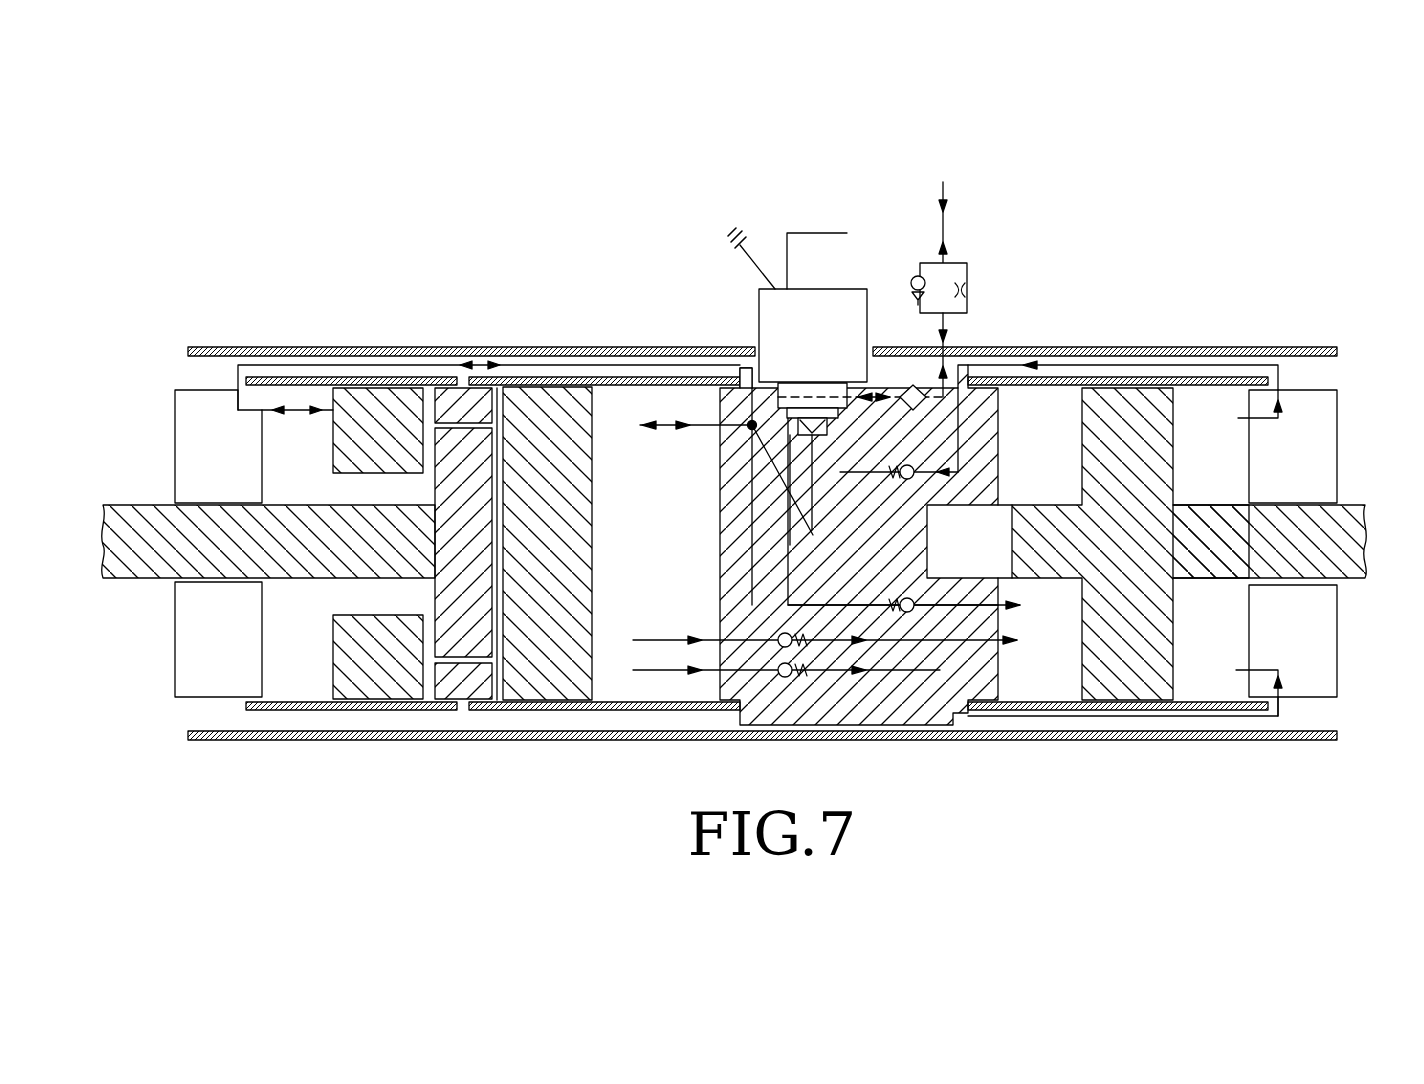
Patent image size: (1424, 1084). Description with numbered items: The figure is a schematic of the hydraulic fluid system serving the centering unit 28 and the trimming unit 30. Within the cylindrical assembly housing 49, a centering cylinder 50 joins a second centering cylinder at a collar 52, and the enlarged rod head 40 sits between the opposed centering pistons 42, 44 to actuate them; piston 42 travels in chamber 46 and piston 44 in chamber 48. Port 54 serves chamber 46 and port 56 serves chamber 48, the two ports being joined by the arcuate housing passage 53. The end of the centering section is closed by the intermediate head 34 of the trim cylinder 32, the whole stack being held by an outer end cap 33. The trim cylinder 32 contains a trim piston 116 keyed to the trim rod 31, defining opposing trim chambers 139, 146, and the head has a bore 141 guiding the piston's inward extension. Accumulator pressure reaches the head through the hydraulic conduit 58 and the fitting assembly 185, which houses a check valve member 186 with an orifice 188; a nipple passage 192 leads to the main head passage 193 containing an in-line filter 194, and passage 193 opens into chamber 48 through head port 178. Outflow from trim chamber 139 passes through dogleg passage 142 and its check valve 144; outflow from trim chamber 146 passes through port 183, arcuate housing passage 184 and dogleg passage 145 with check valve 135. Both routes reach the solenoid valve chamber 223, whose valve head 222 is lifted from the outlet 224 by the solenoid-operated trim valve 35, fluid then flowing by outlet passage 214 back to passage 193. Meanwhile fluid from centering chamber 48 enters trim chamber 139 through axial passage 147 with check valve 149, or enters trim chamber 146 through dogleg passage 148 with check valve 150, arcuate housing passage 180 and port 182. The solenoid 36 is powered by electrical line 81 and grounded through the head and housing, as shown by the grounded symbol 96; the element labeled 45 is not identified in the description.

The centering unit 28 is at (428, 764).
The trimming unit 30 is at (1297, 790).
The trim rod 31 is at (1358, 503).
The trim cylinder 32 is at (1196, 377).
The outer end head 33 is at (1343, 656).
The intermediate head 34 is at (862, 714).
The trim valve 35 is at (780, 362).
The solenoid 36 is at (813, 335).
The rod head 40 is at (433, 487).
The centering piston 42 is at (333, 672).
The centering piston 44 is at (565, 693).
The control line 45 is at (867, 367).
The centering chamber 46 is at (290, 658).
The centering chamber 48 is at (613, 410).
The assembly housing 49 is at (307, 347).
The centering cylinder 50 is at (267, 377).
The collar 52 is at (486, 705).
The arcuate housing passage 53 is at (379, 377).
The outer port 54 is at (258, 412).
The inner port 56 is at (740, 372).
The hydraulic conduit 58 is at (943, 192).
The electrical line 81 is at (810, 233).
The grounded symbol 96 is at (740, 245).
The trim piston 116 is at (1175, 427).
The check valve 135 is at (950, 474).
The trim chamber 139 is at (1062, 697).
The bore 141 is at (1027, 573).
The dogleg passage 142 is at (785, 538).
The check valve 144 is at (907, 605).
The dogleg passage 145 is at (985, 467).
The trim chamber 146 is at (1196, 692).
The axial passage 147 is at (950, 625).
The dogleg passage 148 is at (953, 722).
The check valve 149 is at (783, 633).
The check valve 150 is at (784, 677).
The head port 178 is at (721, 466).
The arcuate housing passage 180 is at (1135, 717).
The port 182 is at (1270, 665).
The port 183 is at (1278, 418).
The arcuate housing passage 184 is at (1165, 363).
The fitting assembly 185 is at (1020, 232).
The check valve member 186 is at (911, 283).
The orifice 188 is at (975, 290).
The passage 192 is at (945, 320).
The main head passage 193 is at (905, 385).
The in-line filter 194 is at (965, 403).
The outlet passage 214 is at (790, 470).
The valve head 222 is at (812, 418).
The solenoid valve chamber 223 is at (960, 440).
The outlet 224 is at (920, 517).